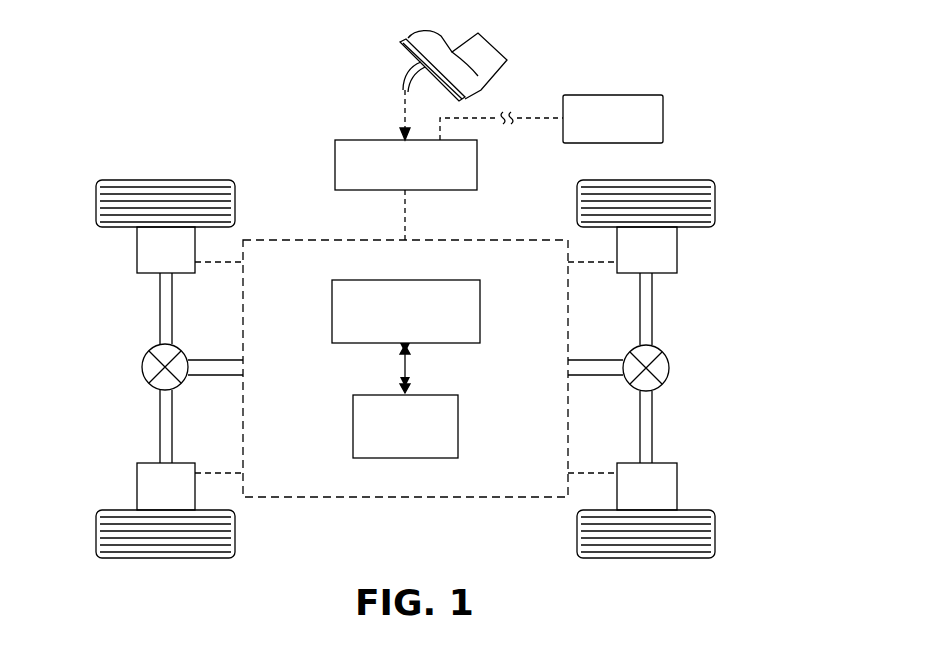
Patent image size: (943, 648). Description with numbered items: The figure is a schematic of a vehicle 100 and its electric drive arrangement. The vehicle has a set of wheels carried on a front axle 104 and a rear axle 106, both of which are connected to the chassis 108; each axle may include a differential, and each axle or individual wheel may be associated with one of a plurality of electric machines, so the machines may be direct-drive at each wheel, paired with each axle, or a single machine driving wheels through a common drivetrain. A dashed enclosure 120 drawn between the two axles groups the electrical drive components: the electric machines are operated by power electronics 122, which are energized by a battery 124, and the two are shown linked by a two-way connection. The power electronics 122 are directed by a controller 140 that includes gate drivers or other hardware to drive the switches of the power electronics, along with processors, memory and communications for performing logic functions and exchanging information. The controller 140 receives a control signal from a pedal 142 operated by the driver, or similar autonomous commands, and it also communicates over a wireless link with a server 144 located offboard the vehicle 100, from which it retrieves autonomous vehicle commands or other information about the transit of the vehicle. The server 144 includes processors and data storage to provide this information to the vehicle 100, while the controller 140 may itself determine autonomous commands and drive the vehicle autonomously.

The vehicle 100 is at (735, 48).
The front axle 104 is at (652, 315).
The rear axle 106 is at (160, 318).
The chassis 108 is at (585, 377).
The powertrain 120 is at (413, 236).
The power electronics 122 is at (481, 310).
The battery 124 is at (459, 427).
The controller 140 is at (372, 140).
The pedal 142 is at (400, 58).
The server 144 is at (612, 95).